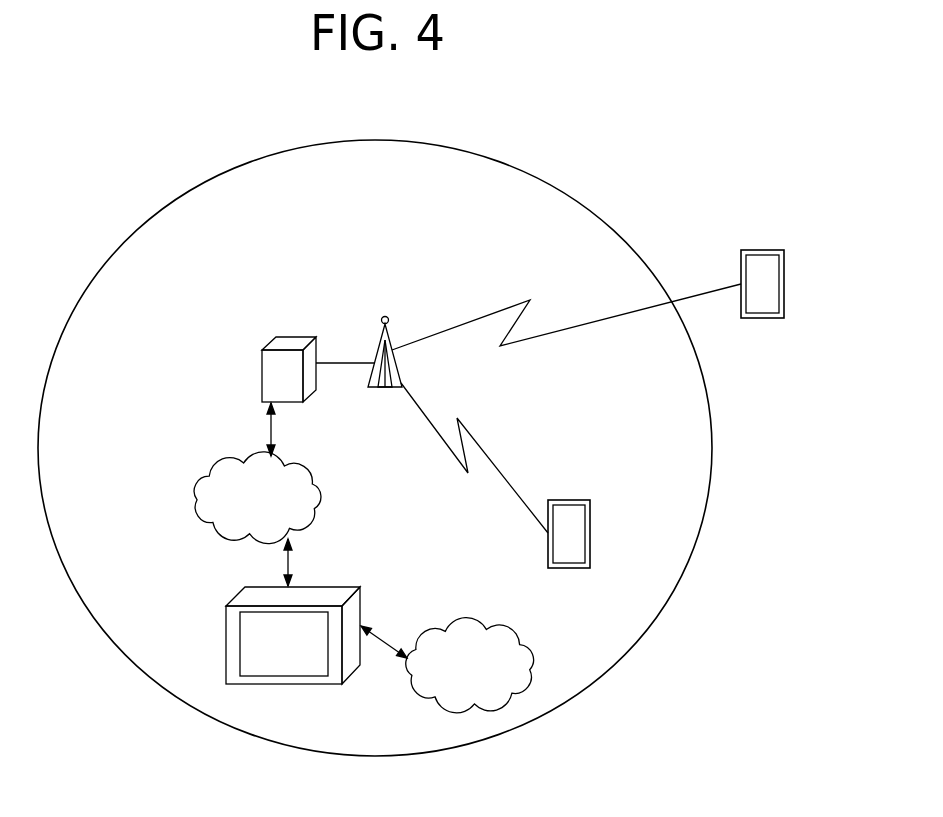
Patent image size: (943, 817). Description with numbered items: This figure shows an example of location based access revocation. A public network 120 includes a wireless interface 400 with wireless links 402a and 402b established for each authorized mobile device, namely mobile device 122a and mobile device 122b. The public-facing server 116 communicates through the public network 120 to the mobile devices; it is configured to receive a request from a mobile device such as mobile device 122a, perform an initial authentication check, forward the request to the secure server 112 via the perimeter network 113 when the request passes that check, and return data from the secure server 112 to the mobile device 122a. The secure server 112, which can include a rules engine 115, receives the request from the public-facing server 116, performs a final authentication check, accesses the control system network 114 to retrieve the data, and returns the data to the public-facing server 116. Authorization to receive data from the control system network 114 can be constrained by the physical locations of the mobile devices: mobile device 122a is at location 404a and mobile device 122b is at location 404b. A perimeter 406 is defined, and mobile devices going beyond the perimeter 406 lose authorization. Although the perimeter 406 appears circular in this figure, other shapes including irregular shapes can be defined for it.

The public network 120 is at (452, 297).
The wireless interface 400 is at (378, 346).
The public-facing server 116 is at (262, 378).
The perimeter network 113 is at (278, 510).
The secure server 112 is at (256, 633).
The rules engine 115 is at (240, 657).
The control system network 114 is at (486, 675).
The wireless link 402a is at (570, 323).
The wireless link 402b is at (490, 458).
The mobile device 122a is at (771, 251).
The mobile device 122b is at (601, 504).
The location 404a is at (786, 284).
The location 404b is at (591, 553).
The perimeter 406 is at (710, 498).